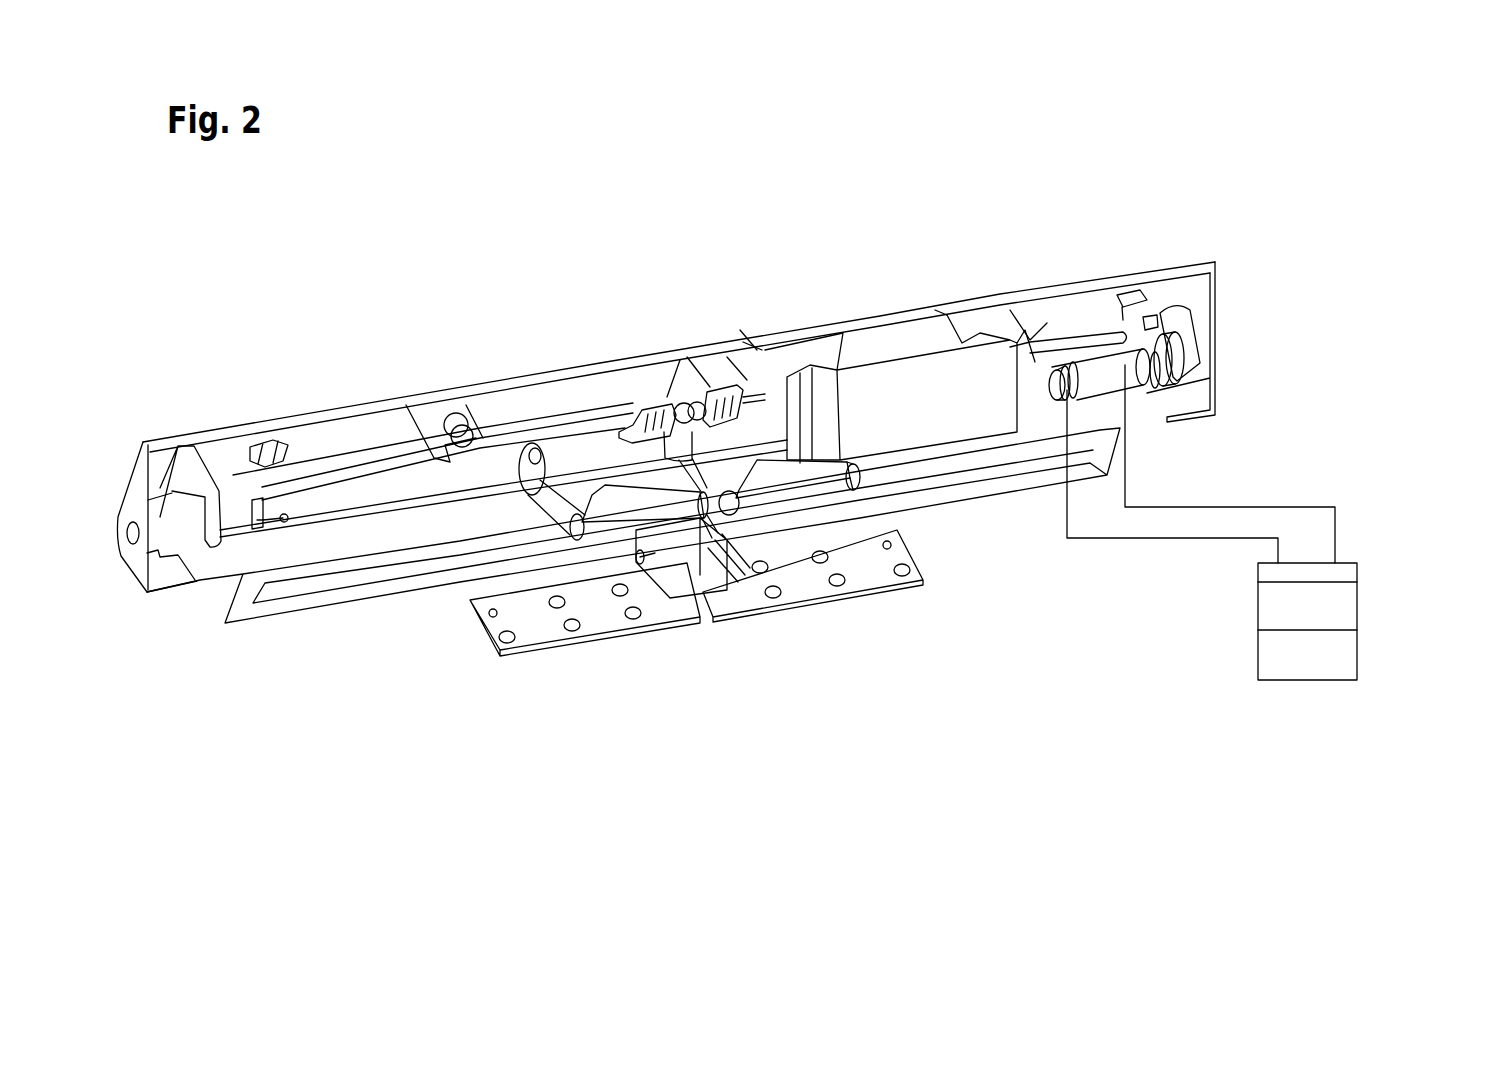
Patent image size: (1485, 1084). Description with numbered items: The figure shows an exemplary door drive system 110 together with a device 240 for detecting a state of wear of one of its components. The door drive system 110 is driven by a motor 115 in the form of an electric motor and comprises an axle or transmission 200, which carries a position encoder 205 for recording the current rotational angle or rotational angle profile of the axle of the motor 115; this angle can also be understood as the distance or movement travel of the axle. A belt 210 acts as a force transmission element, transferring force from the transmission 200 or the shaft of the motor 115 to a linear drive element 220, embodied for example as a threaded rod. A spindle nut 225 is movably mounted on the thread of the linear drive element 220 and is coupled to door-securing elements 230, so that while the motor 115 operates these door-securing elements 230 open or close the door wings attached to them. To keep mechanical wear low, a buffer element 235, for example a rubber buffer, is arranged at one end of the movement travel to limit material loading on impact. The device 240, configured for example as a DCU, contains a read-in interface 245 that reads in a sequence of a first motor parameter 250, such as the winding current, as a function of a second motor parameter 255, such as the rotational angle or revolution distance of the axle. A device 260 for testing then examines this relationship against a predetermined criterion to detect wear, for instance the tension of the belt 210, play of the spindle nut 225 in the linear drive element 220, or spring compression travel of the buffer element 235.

The door drive system 110 is at (1013, 507).
The motor 115 is at (1098, 370).
The transmission 200 is at (1153, 350).
The position encoder 205 is at (1045, 370).
The belt 210 is at (1180, 353).
The linear drive element 220 is at (334, 468).
The spindle nut 225 is at (730, 392).
The door-securing elements 230 is at (582, 465).
The buffer element 235 is at (617, 567).
The device for detecting a state of wear 240 is at (1355, 667).
The read-in interface 245 is at (1348, 568).
The first motor parameter 250 is at (1272, 507).
The second motor parameter 255 is at (1190, 540).
The device for testing 260 is at (1348, 602).